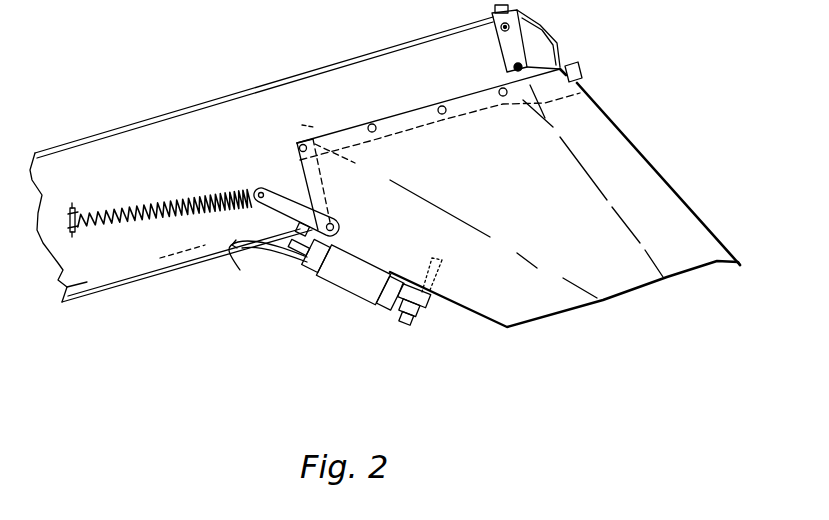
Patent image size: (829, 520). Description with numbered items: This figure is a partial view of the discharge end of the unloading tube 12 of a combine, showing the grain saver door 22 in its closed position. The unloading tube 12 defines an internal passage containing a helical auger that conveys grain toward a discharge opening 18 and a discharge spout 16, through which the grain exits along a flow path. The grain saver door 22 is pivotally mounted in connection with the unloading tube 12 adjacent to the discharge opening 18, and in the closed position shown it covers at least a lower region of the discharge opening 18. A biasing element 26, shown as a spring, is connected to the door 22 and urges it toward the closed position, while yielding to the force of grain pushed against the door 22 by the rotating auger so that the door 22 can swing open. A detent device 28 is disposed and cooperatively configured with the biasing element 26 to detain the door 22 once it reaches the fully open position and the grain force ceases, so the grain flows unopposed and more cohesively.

The unloading tube 12 is at (113, 118).
The discharge spout 16 is at (625, 133).
The discharge opening 18 is at (622, 308).
The grain saver door 22 is at (332, 179).
The biasing element 26 is at (146, 188).
The detent device 28 is at (345, 299).